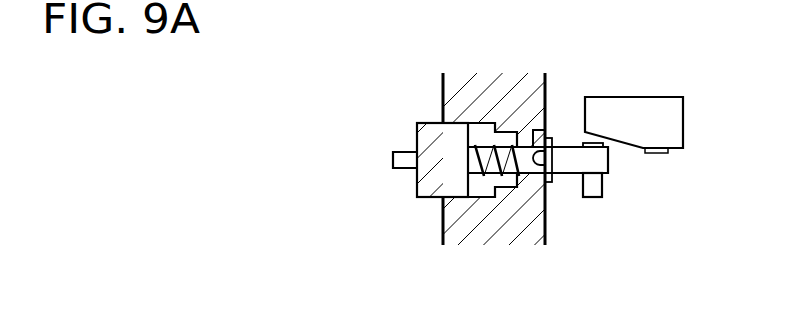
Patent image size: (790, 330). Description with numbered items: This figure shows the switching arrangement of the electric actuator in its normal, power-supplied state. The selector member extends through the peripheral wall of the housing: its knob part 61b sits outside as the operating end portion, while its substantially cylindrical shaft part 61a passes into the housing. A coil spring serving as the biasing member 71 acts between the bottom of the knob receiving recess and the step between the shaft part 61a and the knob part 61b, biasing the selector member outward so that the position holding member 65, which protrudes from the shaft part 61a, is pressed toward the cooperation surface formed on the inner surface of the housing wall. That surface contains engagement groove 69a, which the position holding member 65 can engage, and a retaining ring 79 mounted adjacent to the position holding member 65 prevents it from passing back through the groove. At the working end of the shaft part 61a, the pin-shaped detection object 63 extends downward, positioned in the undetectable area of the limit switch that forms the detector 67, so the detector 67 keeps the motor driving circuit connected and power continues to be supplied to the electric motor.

The shaft part 61a is at (600, 163).
The knob part 61b is at (428, 133).
The detection object 63 is at (592, 199).
The position holding member 65 is at (541, 185).
The detector 67 is at (652, 97).
The engagement groove 69a is at (550, 135).
The biasing member 71 is at (480, 143).
The retaining ring 79 is at (557, 142).